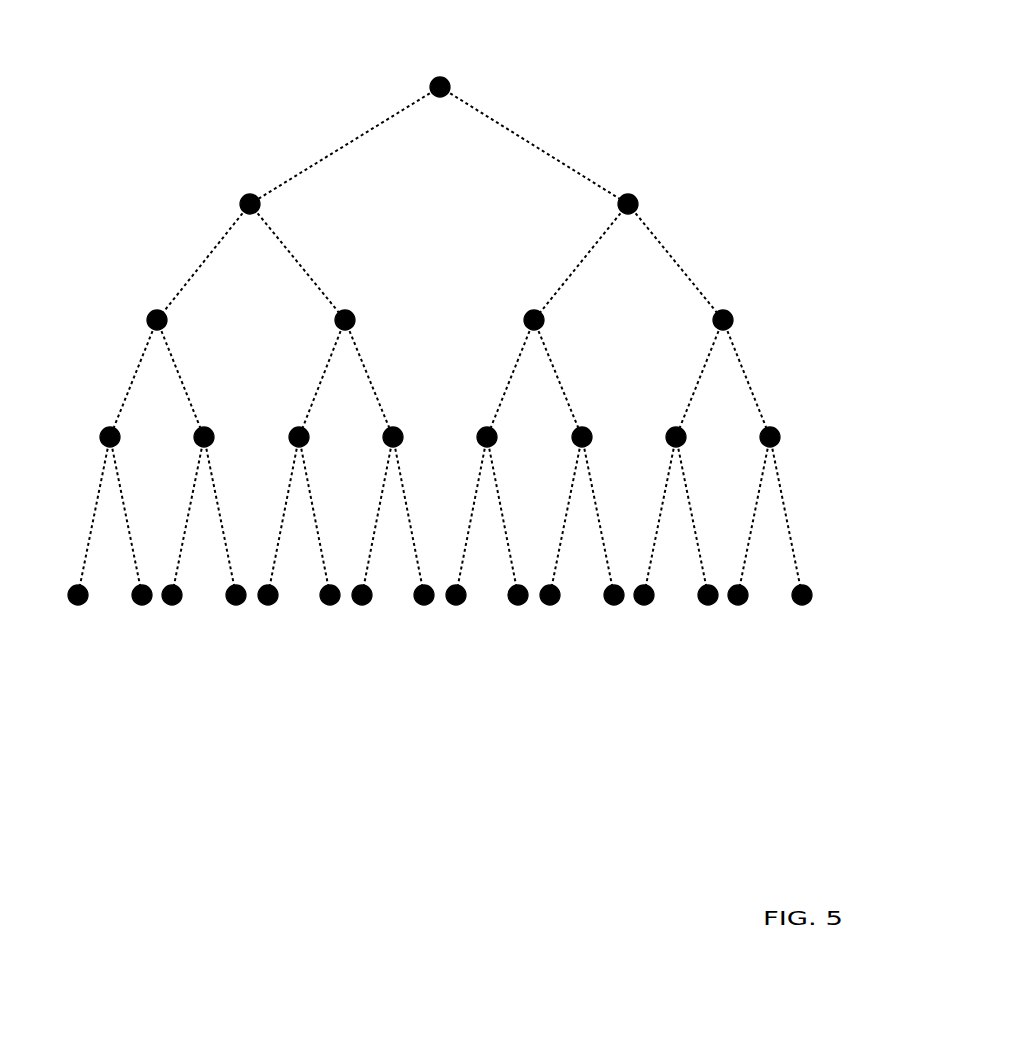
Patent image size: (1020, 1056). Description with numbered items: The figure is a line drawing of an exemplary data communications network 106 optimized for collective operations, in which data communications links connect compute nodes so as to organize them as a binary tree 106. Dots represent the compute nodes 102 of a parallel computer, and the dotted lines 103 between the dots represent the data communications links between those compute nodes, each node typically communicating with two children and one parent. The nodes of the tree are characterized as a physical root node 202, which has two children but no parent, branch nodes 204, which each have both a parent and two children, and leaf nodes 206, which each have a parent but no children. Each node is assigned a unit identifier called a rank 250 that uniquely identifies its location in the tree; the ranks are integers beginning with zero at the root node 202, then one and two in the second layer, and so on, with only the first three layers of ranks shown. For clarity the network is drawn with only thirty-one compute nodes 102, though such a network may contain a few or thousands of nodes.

The compute nodes 102 is at (518, 605).
The dotted lines 103 is at (353, 137).
The data communications network 106 is at (211, 711).
The physical root node 202 is at (471, 71).
The branch nodes 204 is at (823, 150).
The leaf nodes 206 is at (823, 633).
The rank 250 is at (578, 215).